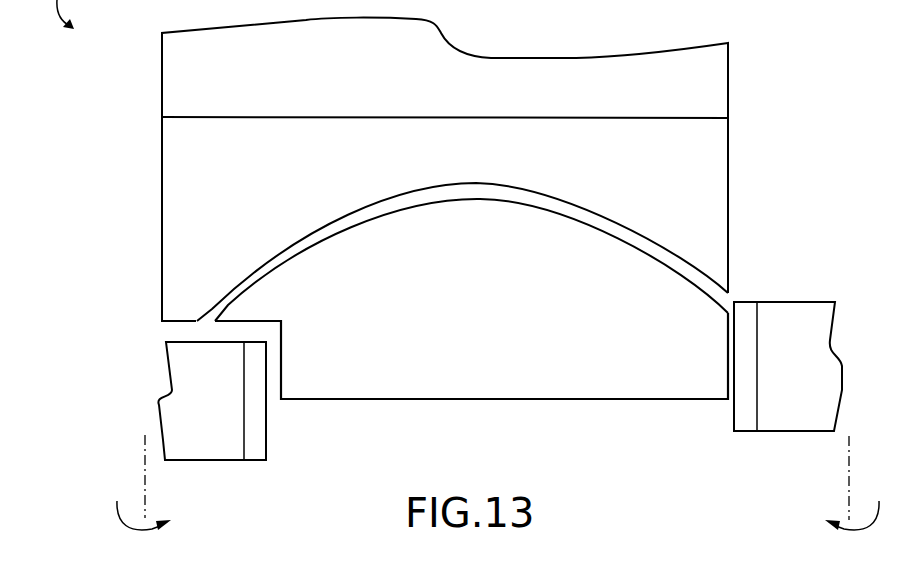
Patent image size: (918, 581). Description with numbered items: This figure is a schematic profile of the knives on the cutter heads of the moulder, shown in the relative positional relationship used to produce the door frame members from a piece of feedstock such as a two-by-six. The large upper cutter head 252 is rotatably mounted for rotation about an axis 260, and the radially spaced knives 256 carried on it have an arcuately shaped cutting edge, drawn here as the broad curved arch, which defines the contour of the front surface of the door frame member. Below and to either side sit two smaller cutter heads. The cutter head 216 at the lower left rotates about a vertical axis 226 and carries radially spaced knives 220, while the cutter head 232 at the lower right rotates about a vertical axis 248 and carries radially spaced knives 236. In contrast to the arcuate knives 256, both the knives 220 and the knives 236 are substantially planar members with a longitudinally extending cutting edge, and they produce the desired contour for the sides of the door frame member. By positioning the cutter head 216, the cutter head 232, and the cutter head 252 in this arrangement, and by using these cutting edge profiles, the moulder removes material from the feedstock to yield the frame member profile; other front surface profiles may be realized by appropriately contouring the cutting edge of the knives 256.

The cutter head 252 is at (728, 75).
The knives 256 is at (729, 194).
The axis 260 is at (130, 0).
The cutter head 216 is at (208, 462).
The knives 220 is at (268, 436).
The axis 226 is at (144, 478).
The cutter head 232 is at (815, 302).
The knives 236 is at (745, 302).
The axis 248 is at (848, 487).